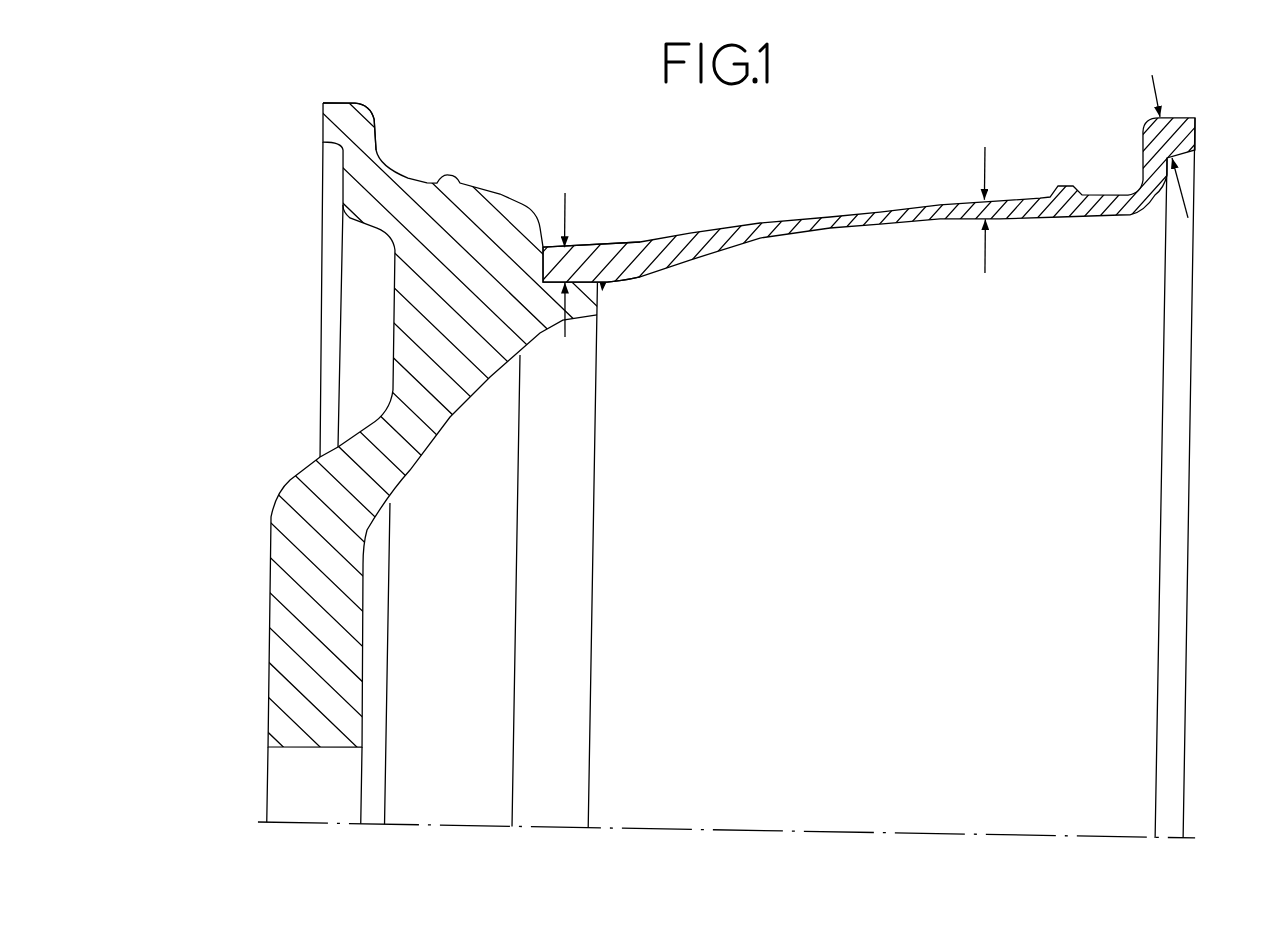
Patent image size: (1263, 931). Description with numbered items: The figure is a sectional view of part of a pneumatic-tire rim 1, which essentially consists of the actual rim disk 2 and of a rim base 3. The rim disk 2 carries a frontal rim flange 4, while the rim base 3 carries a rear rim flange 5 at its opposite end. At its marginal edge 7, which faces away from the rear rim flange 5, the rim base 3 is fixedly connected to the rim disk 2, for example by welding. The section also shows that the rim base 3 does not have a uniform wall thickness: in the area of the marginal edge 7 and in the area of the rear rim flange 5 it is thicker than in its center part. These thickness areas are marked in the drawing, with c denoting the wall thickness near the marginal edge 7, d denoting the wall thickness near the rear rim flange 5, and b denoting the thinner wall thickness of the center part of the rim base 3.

The pneumatic-tire rim 1 is at (878, 435).
The rim disk 2 is at (260, 682).
The rim base 3 is at (847, 194).
The frontal rim flange 4 is at (365, 119).
The rear rim flange 5 is at (1187, 95).
The marginal edge 7 is at (597, 242).